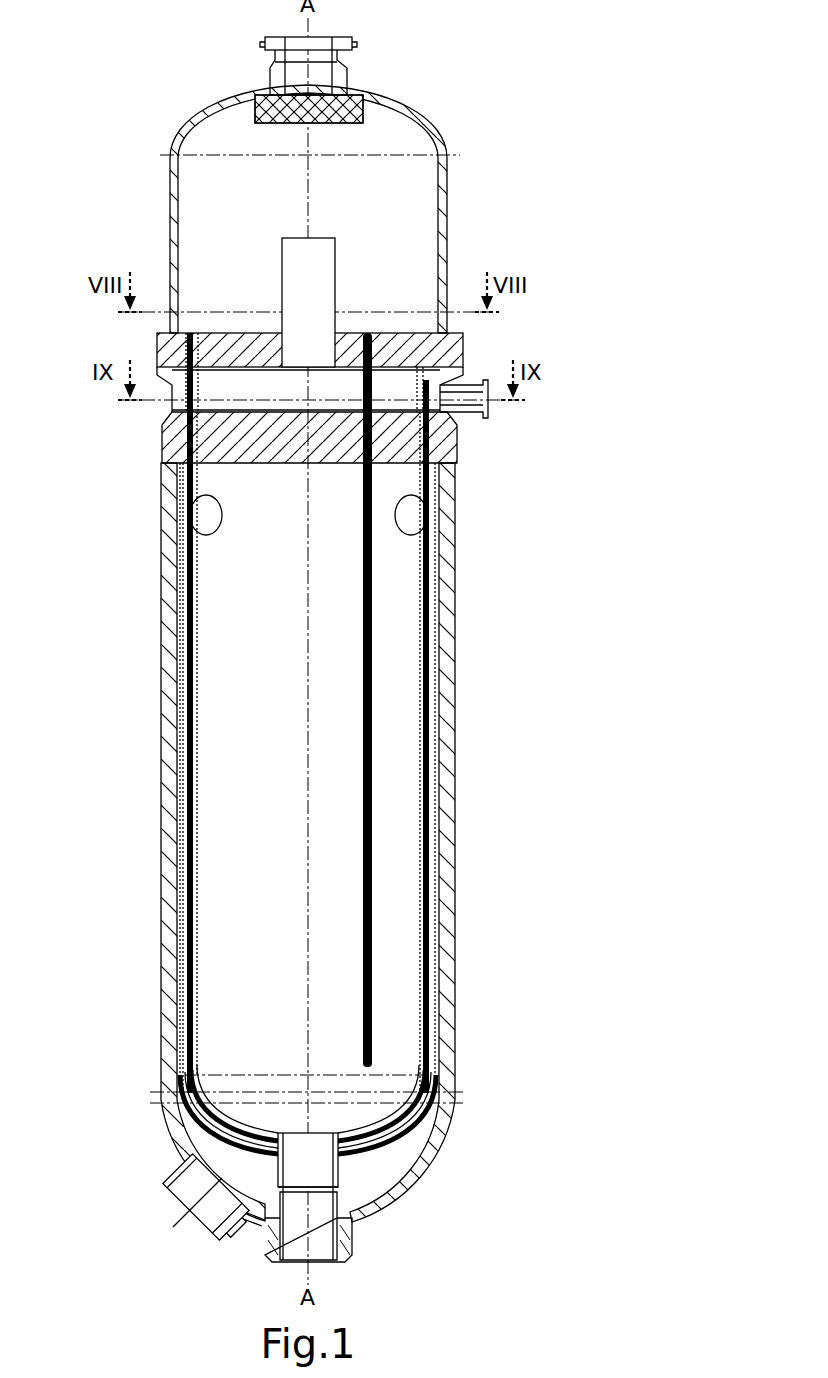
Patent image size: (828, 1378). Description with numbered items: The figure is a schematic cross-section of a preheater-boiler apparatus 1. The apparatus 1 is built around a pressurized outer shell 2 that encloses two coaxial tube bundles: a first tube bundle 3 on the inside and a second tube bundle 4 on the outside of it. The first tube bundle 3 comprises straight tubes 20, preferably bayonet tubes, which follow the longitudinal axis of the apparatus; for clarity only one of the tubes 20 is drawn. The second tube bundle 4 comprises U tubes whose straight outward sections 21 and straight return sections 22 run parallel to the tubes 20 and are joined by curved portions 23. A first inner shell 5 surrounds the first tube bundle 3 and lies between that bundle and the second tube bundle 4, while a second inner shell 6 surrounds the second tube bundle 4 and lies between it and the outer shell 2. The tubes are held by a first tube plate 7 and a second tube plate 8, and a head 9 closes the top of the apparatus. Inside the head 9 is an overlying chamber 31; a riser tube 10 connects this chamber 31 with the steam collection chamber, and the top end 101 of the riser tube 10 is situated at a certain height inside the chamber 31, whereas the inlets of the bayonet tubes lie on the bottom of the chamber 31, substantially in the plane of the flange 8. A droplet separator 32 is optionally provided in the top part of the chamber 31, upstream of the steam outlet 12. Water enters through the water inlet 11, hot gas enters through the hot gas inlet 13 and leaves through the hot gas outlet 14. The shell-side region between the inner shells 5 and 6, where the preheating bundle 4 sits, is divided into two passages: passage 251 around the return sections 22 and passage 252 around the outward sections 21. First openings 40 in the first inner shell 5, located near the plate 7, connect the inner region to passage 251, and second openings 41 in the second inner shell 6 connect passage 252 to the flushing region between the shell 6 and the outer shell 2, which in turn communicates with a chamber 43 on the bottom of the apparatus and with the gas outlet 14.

The preheater-boiler apparatus 1 is at (642, 679).
The outer shell 2 is at (457, 585).
The first tube bundle 3 is at (399, 787).
The second tube bundle 4 is at (449, 860).
The first inner shell 5 is at (198, 634).
The second inner shell 6 is at (178, 606).
The first tube plate 7 is at (455, 440).
The second tube plate 8 is at (458, 340).
The head 9 is at (440, 213).
The riser tube 10 is at (335, 278).
The top end of the riser tube 101 is at (333, 238).
The water inlet 11 is at (488, 415).
The steam outlet 12 is at (352, 40).
The hot gas inlet 13 is at (340, 1262).
The hot gas outlet 14 is at (185, 1215).
The straight tubes 20 is at (363, 833).
The straight outward sections 21 is at (457, 960).
The straight return sections 22 is at (160, 960).
The curved portions 23 is at (390, 1152).
The overlying chamber 31 is at (195, 220).
The droplet separator 32 is at (283, 117).
The first openings 40 is at (190, 515).
The second openings 41 is at (428, 520).
The chamber 43 is at (262, 1197).
The passage 251 is at (168, 778).
The passage 252 is at (449, 674).